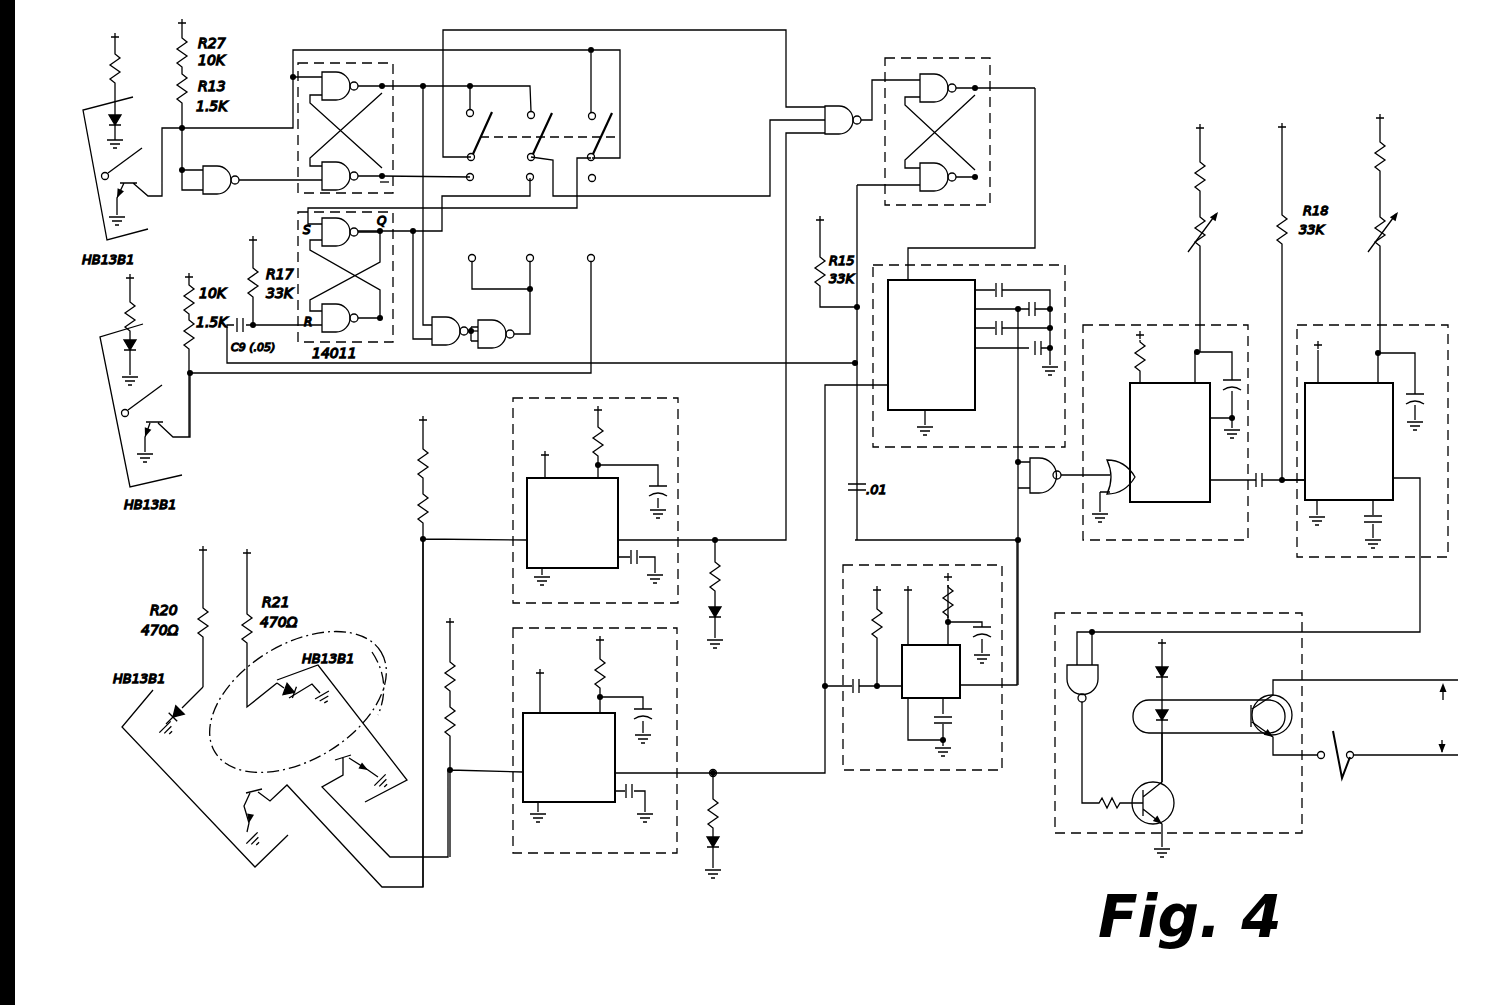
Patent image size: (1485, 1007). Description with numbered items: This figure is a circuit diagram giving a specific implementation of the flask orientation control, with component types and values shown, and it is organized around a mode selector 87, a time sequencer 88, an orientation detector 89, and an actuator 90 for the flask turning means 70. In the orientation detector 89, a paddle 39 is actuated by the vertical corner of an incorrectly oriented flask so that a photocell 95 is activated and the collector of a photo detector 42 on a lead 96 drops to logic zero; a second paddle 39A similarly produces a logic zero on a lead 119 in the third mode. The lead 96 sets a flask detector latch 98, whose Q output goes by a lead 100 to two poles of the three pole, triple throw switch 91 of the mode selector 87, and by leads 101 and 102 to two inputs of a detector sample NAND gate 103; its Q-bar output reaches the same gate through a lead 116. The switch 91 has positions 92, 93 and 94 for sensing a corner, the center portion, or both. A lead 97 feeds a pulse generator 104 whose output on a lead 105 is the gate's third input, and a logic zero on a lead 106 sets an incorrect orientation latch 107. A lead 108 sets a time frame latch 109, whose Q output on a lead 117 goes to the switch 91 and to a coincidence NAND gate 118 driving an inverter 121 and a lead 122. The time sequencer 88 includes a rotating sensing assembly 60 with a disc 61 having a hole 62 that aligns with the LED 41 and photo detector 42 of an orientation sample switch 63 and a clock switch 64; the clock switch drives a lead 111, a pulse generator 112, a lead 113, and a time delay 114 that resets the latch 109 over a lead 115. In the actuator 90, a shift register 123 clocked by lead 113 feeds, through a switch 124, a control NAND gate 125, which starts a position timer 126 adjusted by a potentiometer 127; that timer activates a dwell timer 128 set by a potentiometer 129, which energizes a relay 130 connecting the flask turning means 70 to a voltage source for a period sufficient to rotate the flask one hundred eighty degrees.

The paddle 39 is at (132, 143).
The paddle 39A is at (142, 392).
The LED 41 is at (125, 100).
The photo detector 42 is at (133, 200).
The rotary encoder assembly 60 is at (327, 587).
The disc 61 is at (377, 627).
The hole 62 is at (267, 748).
The orientation sample switch 63 is at (182, 803).
The clock switch 64 is at (372, 713).
The flask turning means 70 is at (1337, 728).
The mode selector 87 is at (655, 120).
The time sequencer 88 is at (451, 912).
The orientation detector 89 is at (289, 396).
The actuator 90 is at (1163, 78).
The three pole, triple throw switch 91 is at (612, 142).
The switch position 92 is at (606, 106).
The switch position 93 is at (605, 188).
The switch position 94 is at (612, 258).
The photocell 95 is at (92, 194).
The lead 96 is at (230, 128).
The lead 97 is at (425, 591).
The flask detector latch 98 is at (296, 143).
The lead 100 is at (482, 86).
The lead 101 is at (697, 33).
The lead 102 is at (712, 195).
The detector sample NAND gate 103 is at (832, 112).
The pulse generator 104 is at (692, 398).
The lead 105 is at (786, 467).
The lead 106 is at (870, 127).
The incorrect orientation latch 107 is at (1000, 57).
The lead 108 is at (497, 208).
The time frame latch 109 is at (396, 352).
The lead 111 is at (455, 803).
The pulse generator 112 is at (580, 866).
The lead 113 is at (800, 770).
The time delay 114 is at (869, 788).
The lead 115 is at (1001, 537).
The lead 116 is at (428, 178).
The lead 117 is at (442, 218).
The coincidence NAND gate 118 is at (446, 323).
The lead 119 is at (593, 323).
The inverter 121 is at (505, 345).
The lead 122 is at (533, 312).
The shift register 123 is at (1075, 258).
The switch 124 is at (1018, 368).
The control NAND gate 125 is at (1040, 475).
The position timer 126 is at (1117, 322).
The potentiometer 127 is at (1185, 255).
The dwell timer 128 is at (1400, 318).
The potentiometer 129 is at (1390, 250).
The relay 130 is at (1044, 848).